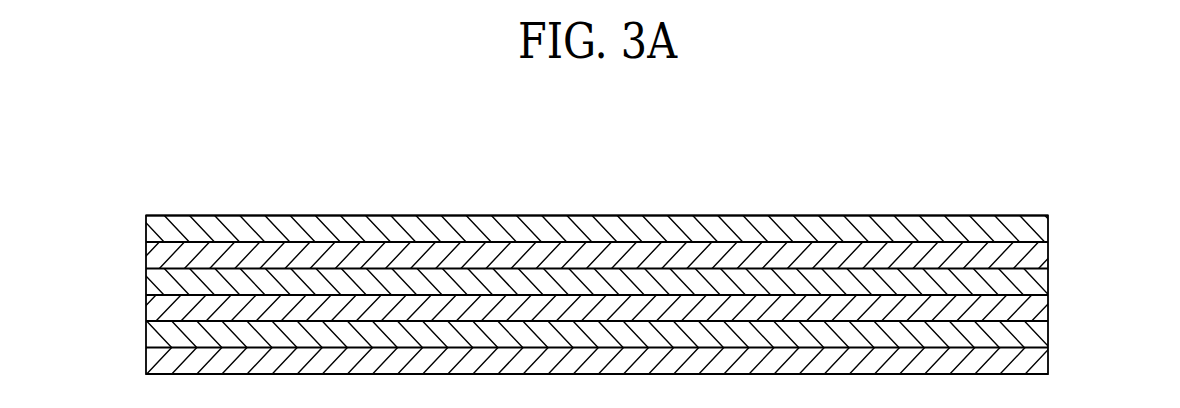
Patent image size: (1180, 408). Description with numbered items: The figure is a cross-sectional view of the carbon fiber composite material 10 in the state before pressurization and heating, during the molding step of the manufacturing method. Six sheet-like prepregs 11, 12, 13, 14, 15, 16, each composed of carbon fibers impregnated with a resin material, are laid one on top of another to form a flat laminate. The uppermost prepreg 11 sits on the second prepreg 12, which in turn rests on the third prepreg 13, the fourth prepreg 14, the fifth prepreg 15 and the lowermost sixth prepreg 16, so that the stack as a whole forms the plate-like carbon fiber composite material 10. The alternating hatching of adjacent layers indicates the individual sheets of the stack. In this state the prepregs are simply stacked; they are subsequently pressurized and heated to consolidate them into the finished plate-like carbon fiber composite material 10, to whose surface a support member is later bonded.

The carbon fiber composite material 10 is at (1087, 258).
The prepreg 11 is at (146, 233).
The prepreg 12 is at (146, 258).
The prepreg 13 is at (146, 285).
The prepreg 14 is at (146, 310).
The prepreg 15 is at (146, 337).
The prepreg 16 is at (146, 362).